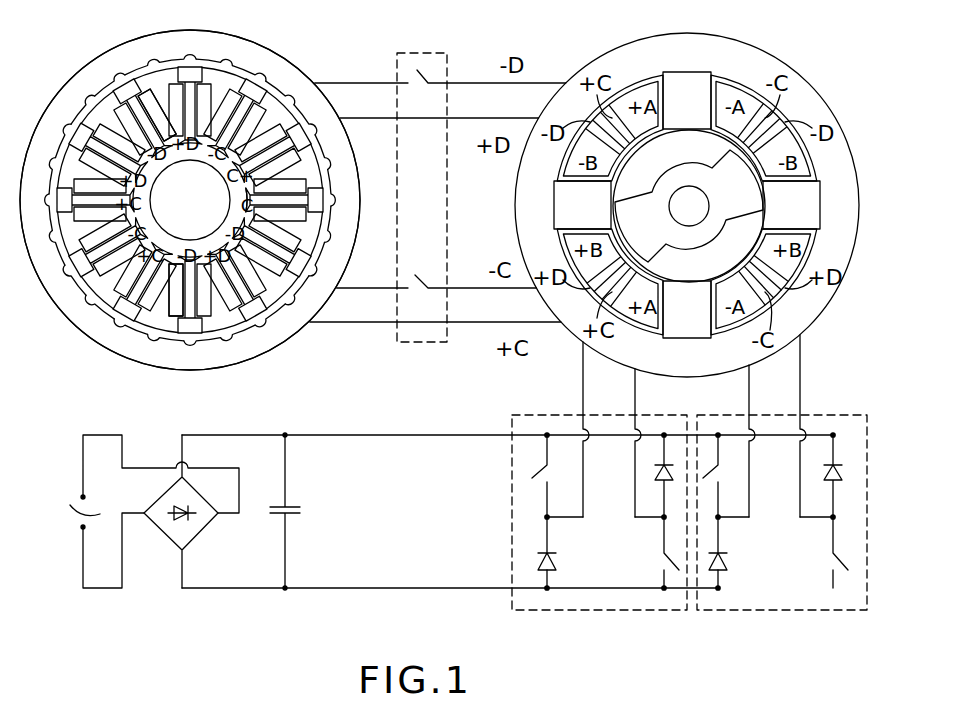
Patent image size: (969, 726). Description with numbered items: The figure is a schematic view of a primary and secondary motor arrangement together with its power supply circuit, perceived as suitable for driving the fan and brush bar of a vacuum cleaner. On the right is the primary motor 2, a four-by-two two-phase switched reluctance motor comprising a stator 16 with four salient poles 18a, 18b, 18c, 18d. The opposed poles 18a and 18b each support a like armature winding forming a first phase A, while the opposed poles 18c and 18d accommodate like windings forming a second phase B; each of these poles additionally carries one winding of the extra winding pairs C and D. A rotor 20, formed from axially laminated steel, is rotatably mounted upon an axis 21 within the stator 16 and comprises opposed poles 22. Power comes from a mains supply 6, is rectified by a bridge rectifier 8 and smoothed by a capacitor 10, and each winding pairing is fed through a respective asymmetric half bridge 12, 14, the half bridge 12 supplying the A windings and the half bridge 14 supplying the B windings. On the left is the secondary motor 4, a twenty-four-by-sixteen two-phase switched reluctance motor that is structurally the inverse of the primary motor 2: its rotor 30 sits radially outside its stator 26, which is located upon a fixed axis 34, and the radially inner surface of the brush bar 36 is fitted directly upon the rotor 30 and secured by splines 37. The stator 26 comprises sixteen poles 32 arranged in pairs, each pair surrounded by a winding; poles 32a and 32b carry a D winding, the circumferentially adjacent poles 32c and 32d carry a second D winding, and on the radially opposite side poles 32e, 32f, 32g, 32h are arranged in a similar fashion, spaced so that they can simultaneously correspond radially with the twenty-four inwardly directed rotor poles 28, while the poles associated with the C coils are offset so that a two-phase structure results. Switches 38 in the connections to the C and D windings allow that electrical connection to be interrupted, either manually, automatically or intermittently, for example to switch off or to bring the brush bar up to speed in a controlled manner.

The primary motor 2 is at (823, 100).
The secondary motor 4 is at (308, 77).
The mains supply 6 is at (72, 495).
The bridge rectifier 8 is at (200, 537).
The capacitor 10 is at (303, 500).
The asymmetric half bridge 12 is at (512, 415).
The asymmetric half bridge 14 is at (830, 415).
The stator 16 is at (815, 297).
The salient pole 18a is at (671, 116).
The salient pole 18b is at (671, 321).
The salient pole 18c is at (560, 219).
The salient pole 18d is at (776, 219).
The rotor 20 is at (721, 225).
The axis 21 is at (680, 217).
The opposed poles 22 is at (720, 201).
The stator 26 is at (253, 190).
The rotor poles 28 is at (235, 77).
The rotor 30 is at (133, 67).
The stator poles 32 is at (247, 155).
The stator pole 32a is at (100, 143).
The stator pole 32b is at (112, 108).
The stator pole 32c is at (155, 72).
The stator pole 32d is at (195, 72).
The stator pole 32e is at (188, 335).
The stator pole 32f is at (222, 335).
The stator pole 32g is at (265, 290).
The stator pole 32h is at (258, 268).
The fixed axis 34 is at (177, 214).
The brush bar 36 is at (190, 200).
The splines 37 is at (83, 333).
The switches 38 is at (420, 68).